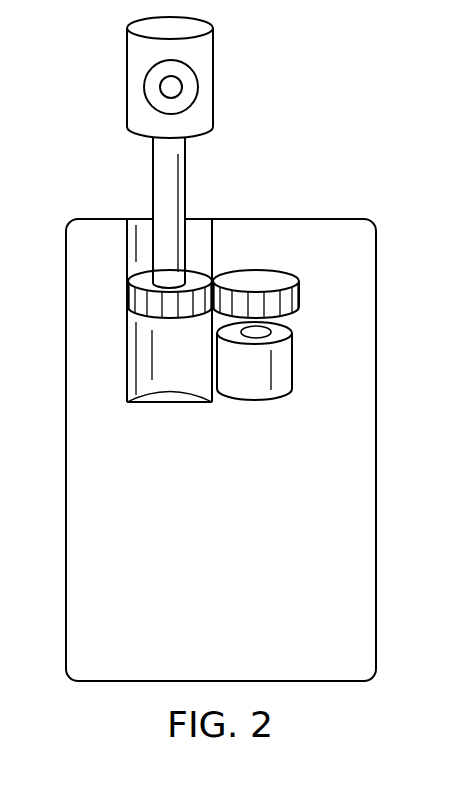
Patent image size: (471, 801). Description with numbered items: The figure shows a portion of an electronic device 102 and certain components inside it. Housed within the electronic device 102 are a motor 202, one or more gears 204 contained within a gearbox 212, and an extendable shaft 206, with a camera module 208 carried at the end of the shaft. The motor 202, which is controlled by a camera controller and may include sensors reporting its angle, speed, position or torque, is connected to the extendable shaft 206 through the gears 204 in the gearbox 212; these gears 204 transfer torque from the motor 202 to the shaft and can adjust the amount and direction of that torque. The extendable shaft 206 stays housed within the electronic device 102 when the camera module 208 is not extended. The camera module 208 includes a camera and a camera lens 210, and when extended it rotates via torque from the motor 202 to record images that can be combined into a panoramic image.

The electronic device 102 is at (203, 550).
The motor 202 is at (253, 403).
The gears 204 is at (247, 248).
The extendable shaft 206 is at (153, 190).
The camera module 208 is at (127, 84).
The camera lens 210 is at (182, 87).
The gearbox 212 is at (311, 268).